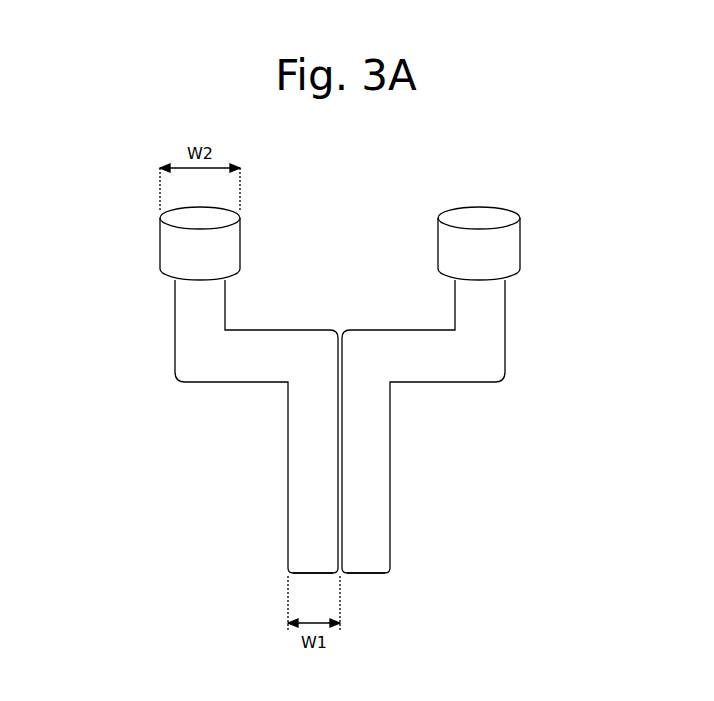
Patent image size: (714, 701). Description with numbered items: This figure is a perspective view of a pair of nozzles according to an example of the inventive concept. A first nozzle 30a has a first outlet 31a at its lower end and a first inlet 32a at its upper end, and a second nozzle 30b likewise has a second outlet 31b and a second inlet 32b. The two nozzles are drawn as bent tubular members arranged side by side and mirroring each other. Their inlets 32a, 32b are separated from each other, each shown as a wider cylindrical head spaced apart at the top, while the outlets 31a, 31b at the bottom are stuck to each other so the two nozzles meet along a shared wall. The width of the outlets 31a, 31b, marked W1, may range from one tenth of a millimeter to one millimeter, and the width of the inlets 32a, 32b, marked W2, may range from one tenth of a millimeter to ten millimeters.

The first nozzle 30a is at (390, 478).
The second nozzle 30b is at (290, 476).
The first outlet 31a is at (366, 578).
The second outlet 31b is at (312, 578).
The first inlet 32a is at (514, 243).
The second inlet 32b is at (165, 243).